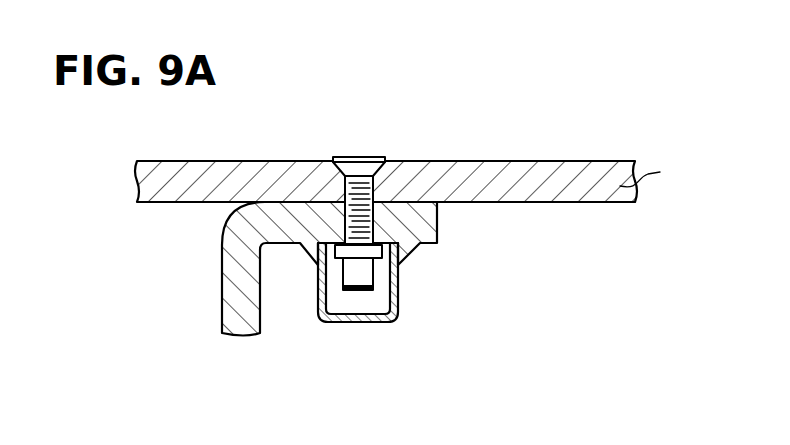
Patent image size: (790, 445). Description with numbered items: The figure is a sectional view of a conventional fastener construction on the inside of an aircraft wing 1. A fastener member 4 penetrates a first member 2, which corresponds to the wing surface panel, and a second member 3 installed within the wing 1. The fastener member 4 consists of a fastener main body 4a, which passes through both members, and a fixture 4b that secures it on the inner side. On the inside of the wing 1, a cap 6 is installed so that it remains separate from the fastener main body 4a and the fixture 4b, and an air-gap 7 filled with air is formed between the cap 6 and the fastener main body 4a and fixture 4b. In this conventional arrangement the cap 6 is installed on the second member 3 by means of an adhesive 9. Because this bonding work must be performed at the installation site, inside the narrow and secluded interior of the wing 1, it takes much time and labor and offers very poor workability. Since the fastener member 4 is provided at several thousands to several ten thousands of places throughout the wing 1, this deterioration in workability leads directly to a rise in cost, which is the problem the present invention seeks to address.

The wing 1 is at (598, 181).
The first member 2 is at (648, 172).
The second member 3 is at (221, 314).
The fastener member 4 is at (369, 158).
The fastener main body 4a is at (386, 198).
The fixture 4b is at (321, 283).
The cap 6 is at (398, 308).
The air-gap 7 is at (378, 284).
The adhesive 9 is at (418, 252).